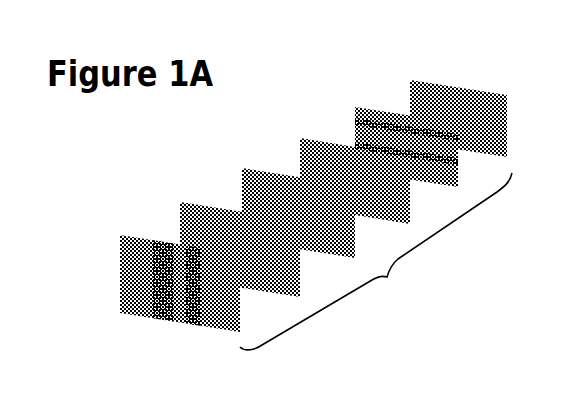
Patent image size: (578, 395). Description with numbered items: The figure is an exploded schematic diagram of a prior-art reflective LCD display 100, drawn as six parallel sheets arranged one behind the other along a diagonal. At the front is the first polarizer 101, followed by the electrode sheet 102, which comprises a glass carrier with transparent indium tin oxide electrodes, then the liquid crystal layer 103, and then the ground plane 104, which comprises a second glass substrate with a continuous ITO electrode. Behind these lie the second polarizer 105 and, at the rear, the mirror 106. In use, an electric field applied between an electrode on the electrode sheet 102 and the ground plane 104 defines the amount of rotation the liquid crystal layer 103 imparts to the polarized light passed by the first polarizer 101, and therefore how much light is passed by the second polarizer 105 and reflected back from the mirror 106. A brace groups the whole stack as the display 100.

The reflective LCD display 100 is at (376, 261).
The first polarizer 101 is at (158, 272).
The electrode sheet 102 is at (217, 239).
The liquid crystal layer 103 is at (275, 203).
The ground plane 104 is at (331, 171).
The second polarizer 105 is at (380, 136).
The mirror 106 is at (437, 106).